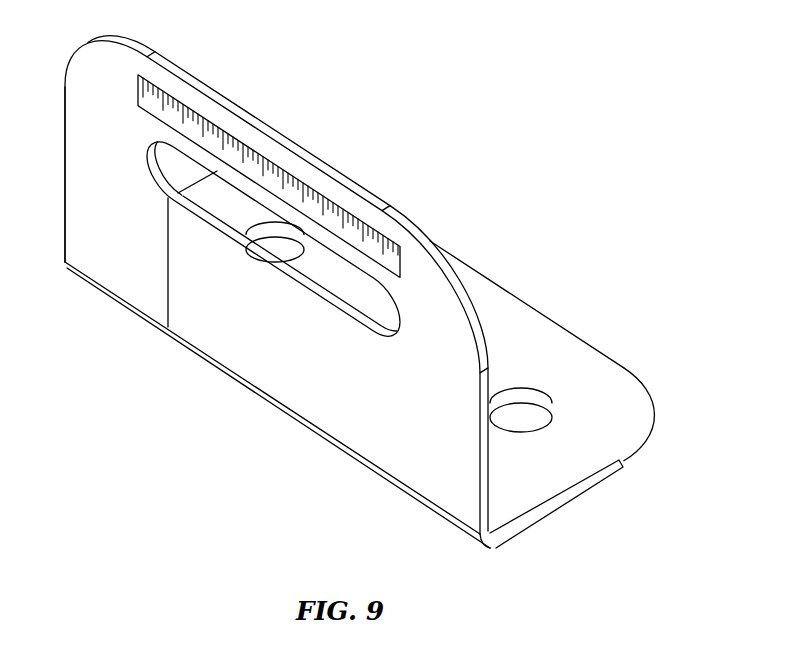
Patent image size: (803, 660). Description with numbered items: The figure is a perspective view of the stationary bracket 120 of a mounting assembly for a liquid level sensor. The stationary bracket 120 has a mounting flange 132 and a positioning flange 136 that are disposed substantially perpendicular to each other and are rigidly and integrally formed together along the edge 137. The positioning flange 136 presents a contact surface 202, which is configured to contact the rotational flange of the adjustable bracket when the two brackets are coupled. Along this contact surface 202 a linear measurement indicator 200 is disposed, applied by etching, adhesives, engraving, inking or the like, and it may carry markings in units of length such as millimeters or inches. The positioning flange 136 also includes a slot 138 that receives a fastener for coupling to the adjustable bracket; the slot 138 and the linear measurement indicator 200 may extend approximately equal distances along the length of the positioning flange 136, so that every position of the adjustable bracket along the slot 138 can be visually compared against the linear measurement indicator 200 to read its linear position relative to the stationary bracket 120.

The stationary bracket 120 is at (371, 274).
The mounting flange 132 is at (607, 428).
The positioning flange 136 is at (440, 345).
The edge 137 is at (241, 387).
The slot 138 is at (323, 306).
The linear measurement indicator 200 is at (271, 152).
The contact surface 202 is at (97, 252).